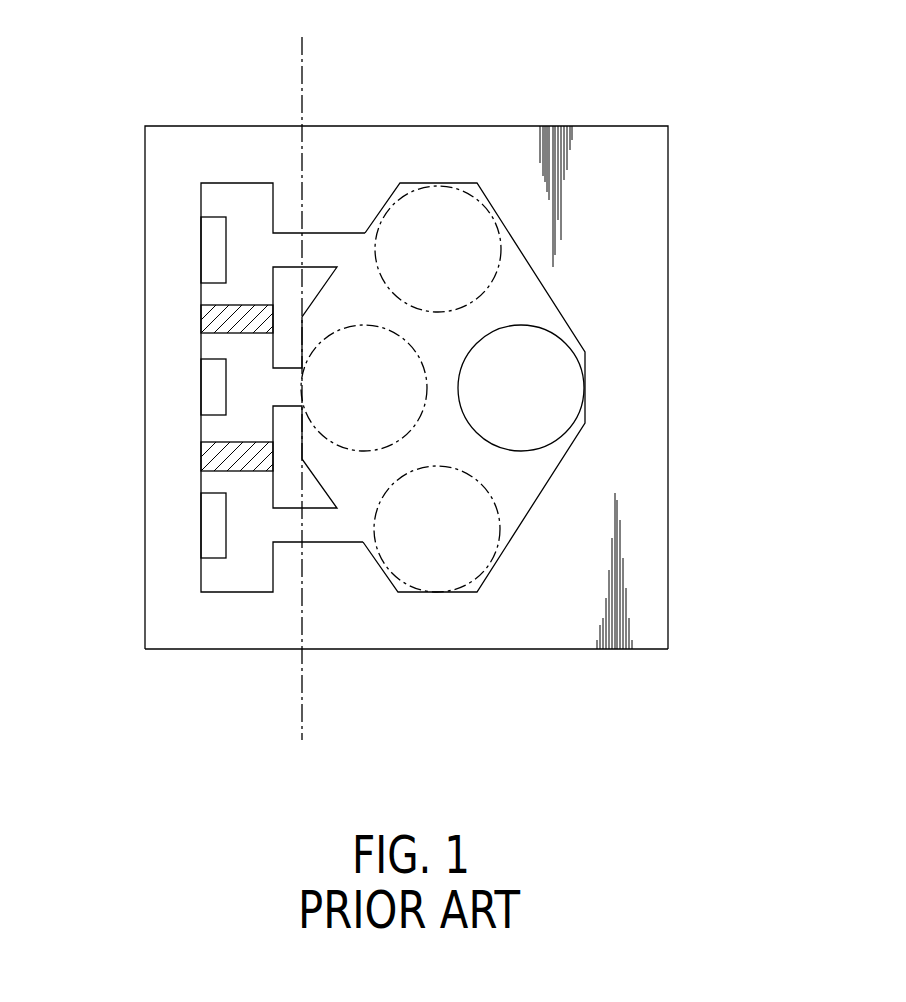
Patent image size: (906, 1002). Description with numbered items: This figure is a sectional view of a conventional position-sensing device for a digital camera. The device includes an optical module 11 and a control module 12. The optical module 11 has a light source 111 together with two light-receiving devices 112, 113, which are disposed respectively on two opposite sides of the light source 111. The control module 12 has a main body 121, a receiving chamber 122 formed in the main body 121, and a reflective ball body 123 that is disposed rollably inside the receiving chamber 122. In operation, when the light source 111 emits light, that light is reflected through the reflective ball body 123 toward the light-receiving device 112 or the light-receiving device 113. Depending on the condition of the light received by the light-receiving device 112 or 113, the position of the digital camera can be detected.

The optical module 11 is at (183, 403).
The light source 111 is at (208, 373).
The light-receiving device 112 is at (226, 251).
The light-receiving device 113 is at (225, 523).
The control module 12 is at (461, 108).
The main body 121 is at (572, 650).
The receiving chamber 122 is at (528, 285).
The reflective ball body 123 is at (552, 388).